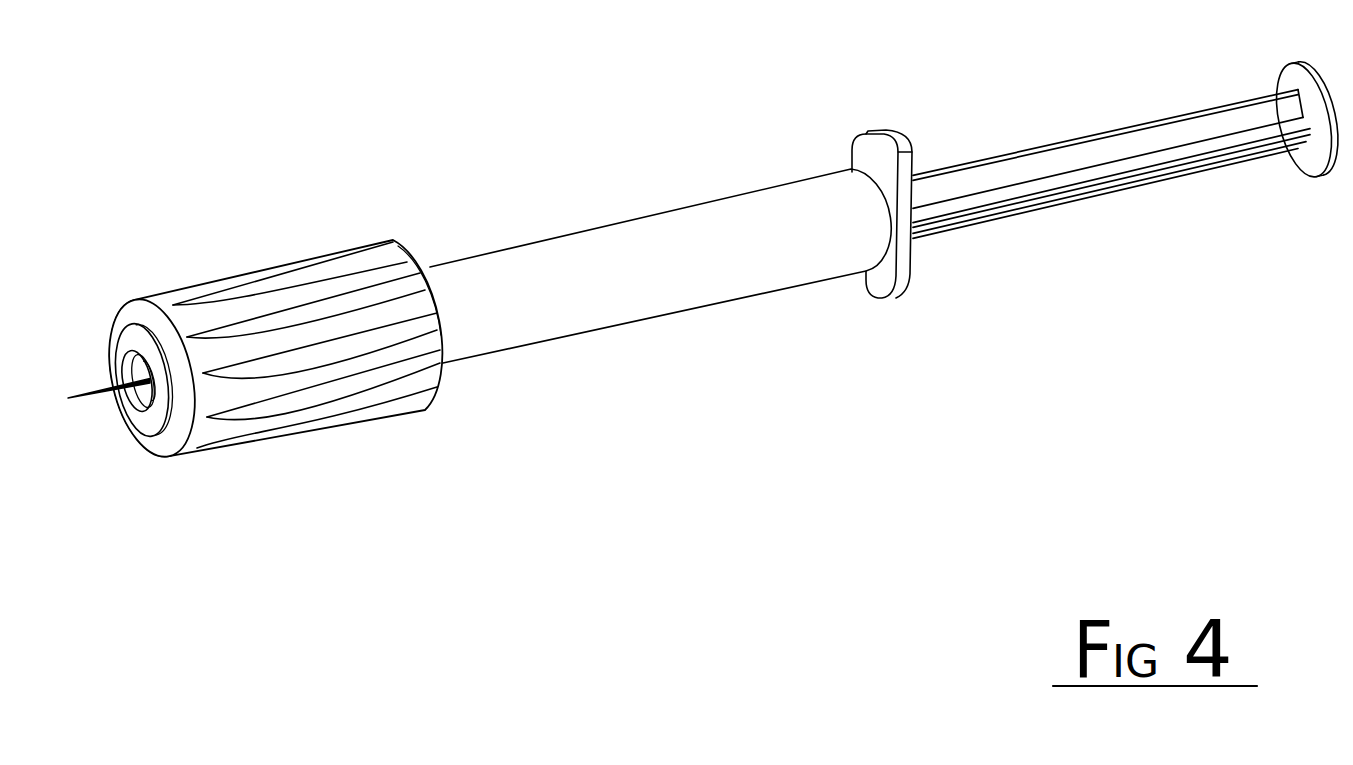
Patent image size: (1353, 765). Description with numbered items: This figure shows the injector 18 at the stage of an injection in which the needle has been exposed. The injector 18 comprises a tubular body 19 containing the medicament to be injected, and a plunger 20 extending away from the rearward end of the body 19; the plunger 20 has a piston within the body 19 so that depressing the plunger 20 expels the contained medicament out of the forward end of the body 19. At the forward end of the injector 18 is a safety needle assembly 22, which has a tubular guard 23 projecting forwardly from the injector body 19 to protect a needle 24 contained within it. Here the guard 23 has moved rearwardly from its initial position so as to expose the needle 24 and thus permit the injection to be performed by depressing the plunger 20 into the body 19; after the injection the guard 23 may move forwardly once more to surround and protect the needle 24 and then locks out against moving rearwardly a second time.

The injector 18 is at (782, 325).
The tubular body 19 is at (615, 255).
The plunger 20 is at (1116, 147).
The safety needle assembly 22 is at (269, 340).
The tubular guard 23 is at (220, 430).
The needle 24 is at (112, 390).